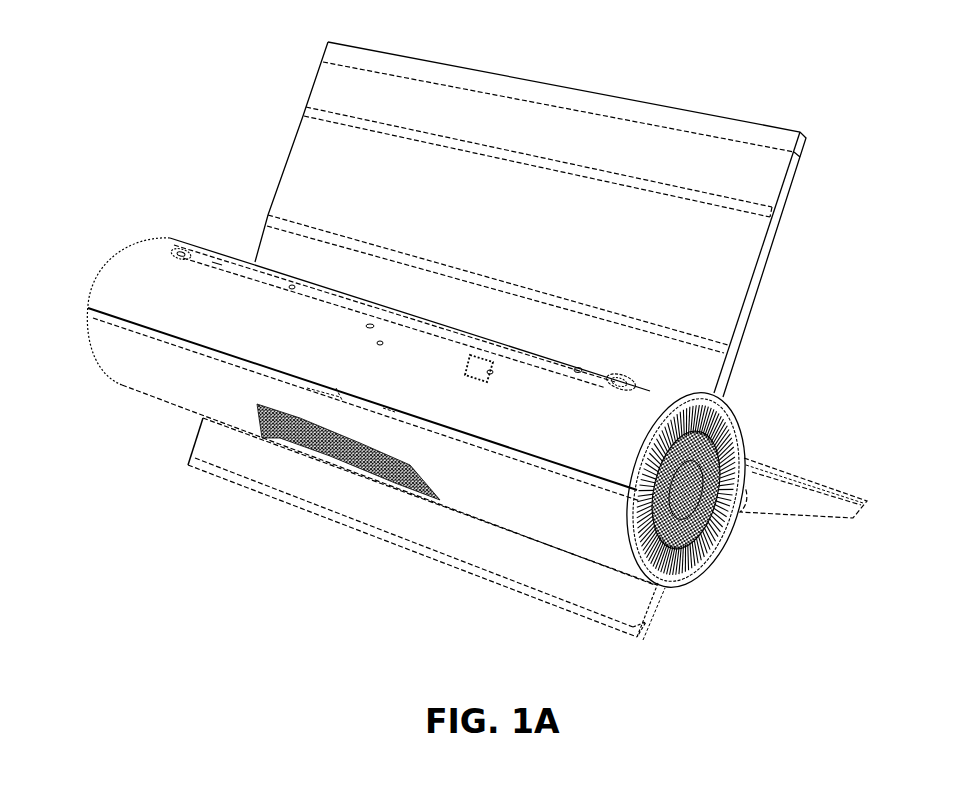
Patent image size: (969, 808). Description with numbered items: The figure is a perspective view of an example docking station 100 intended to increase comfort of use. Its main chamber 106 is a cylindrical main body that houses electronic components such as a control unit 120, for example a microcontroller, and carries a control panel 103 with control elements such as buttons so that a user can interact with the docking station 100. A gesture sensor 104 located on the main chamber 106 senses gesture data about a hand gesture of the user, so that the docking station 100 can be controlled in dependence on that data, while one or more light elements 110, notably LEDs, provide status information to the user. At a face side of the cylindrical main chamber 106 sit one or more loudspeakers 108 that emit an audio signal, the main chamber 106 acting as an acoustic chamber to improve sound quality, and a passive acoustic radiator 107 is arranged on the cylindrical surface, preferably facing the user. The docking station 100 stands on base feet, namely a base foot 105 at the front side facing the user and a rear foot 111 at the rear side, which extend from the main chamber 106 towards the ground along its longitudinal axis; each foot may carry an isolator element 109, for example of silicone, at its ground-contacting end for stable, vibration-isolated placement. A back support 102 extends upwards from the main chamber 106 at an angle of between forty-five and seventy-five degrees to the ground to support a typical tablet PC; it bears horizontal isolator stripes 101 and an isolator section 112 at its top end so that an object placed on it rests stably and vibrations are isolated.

The docking station 100 is at (742, 66).
The isolator stripes 101 is at (395, 249).
The back support 102 is at (465, 202).
The control panel 103 is at (465, 336).
The gesture sensor 104 is at (389, 407).
The base foot 105 is at (280, 464).
The main chamber 106 is at (158, 262).
The acoustic radiator 107 is at (346, 455).
The loudspeaker 108 is at (722, 448).
The isolator element 109 is at (655, 627).
The light element 110 is at (300, 386).
The rear foot 111 is at (800, 510).
The isolator section 112 is at (438, 52).
The control unit 120 is at (468, 362).